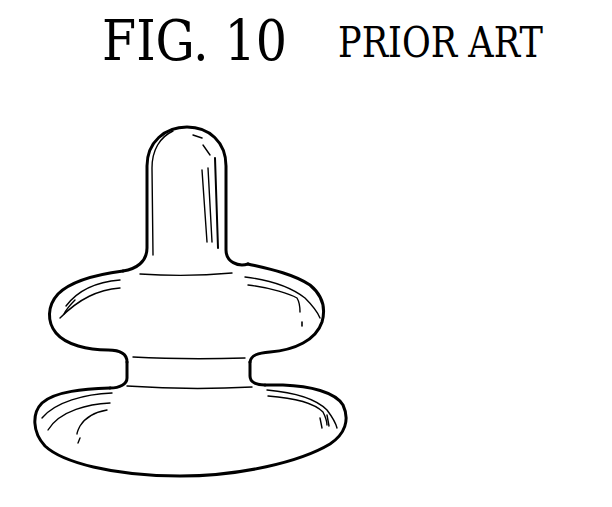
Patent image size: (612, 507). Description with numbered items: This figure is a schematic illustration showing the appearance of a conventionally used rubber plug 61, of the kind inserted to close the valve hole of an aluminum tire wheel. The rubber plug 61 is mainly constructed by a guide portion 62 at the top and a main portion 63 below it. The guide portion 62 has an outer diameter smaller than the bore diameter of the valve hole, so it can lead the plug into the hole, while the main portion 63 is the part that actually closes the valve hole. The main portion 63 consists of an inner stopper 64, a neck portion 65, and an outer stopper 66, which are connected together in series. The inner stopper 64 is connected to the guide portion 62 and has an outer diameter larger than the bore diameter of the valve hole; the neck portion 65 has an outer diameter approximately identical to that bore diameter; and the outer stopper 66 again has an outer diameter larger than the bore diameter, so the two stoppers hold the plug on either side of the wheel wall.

The rubber plug 61 is at (249, 301).
The guide portion 62 is at (177, 203).
The main portion 63 is at (249, 370).
The inner stopper 64 is at (275, 318).
The neck portion 65 is at (230, 375).
The outer stopper 66 is at (220, 430).